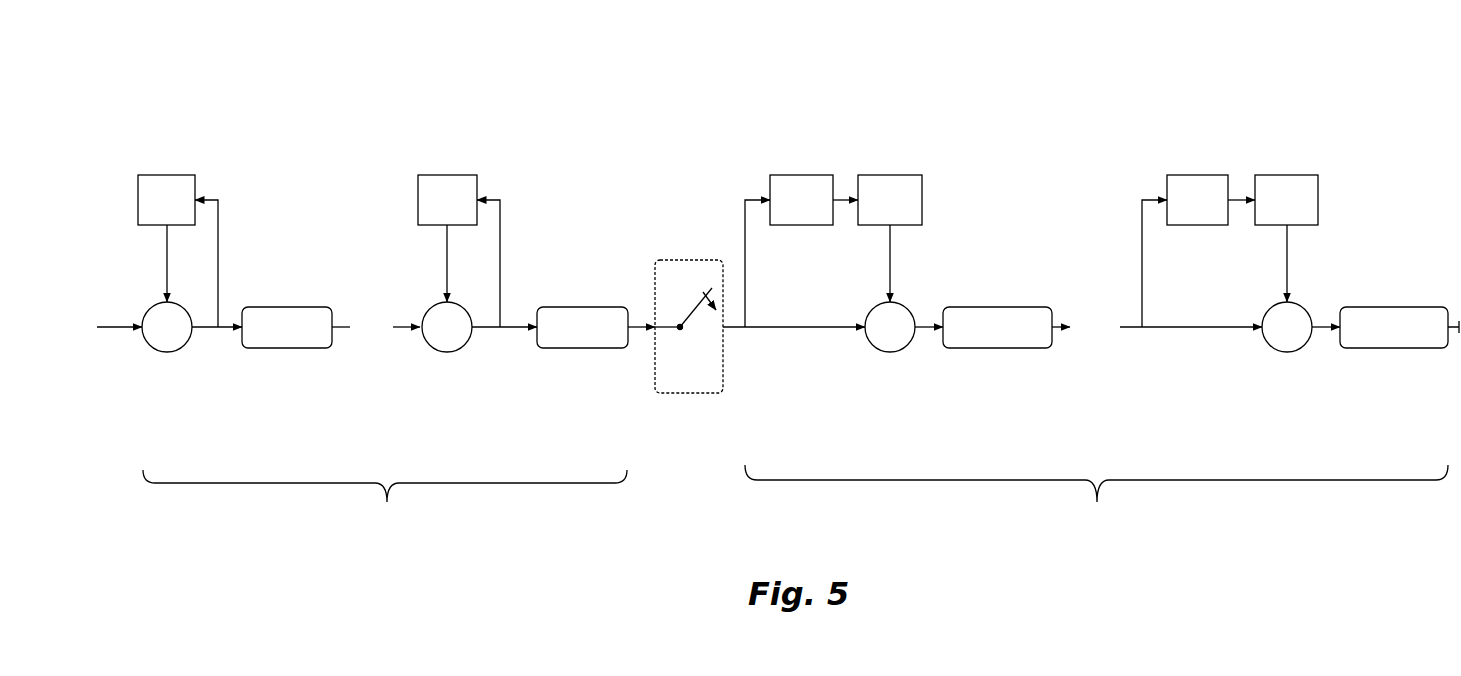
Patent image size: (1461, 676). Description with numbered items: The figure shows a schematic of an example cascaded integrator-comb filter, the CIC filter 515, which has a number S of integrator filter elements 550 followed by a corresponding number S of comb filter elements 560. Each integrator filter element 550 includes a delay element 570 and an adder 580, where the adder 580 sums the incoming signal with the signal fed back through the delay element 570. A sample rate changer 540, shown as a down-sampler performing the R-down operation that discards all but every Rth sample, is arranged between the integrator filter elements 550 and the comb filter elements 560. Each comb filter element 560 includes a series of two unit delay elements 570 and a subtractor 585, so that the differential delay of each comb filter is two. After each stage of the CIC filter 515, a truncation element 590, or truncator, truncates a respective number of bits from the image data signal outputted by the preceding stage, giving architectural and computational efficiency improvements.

The CIC filter 515 is at (1394, 61).
The sample rate changer 540 is at (690, 260).
The integrator filter element 550 is at (117, 397).
The comb filter element 560 is at (738, 395).
The delay element 570 is at (168, 175).
The adder 580 is at (180, 349).
The subtractor 585 is at (908, 311).
The truncation element 590 is at (286, 306).